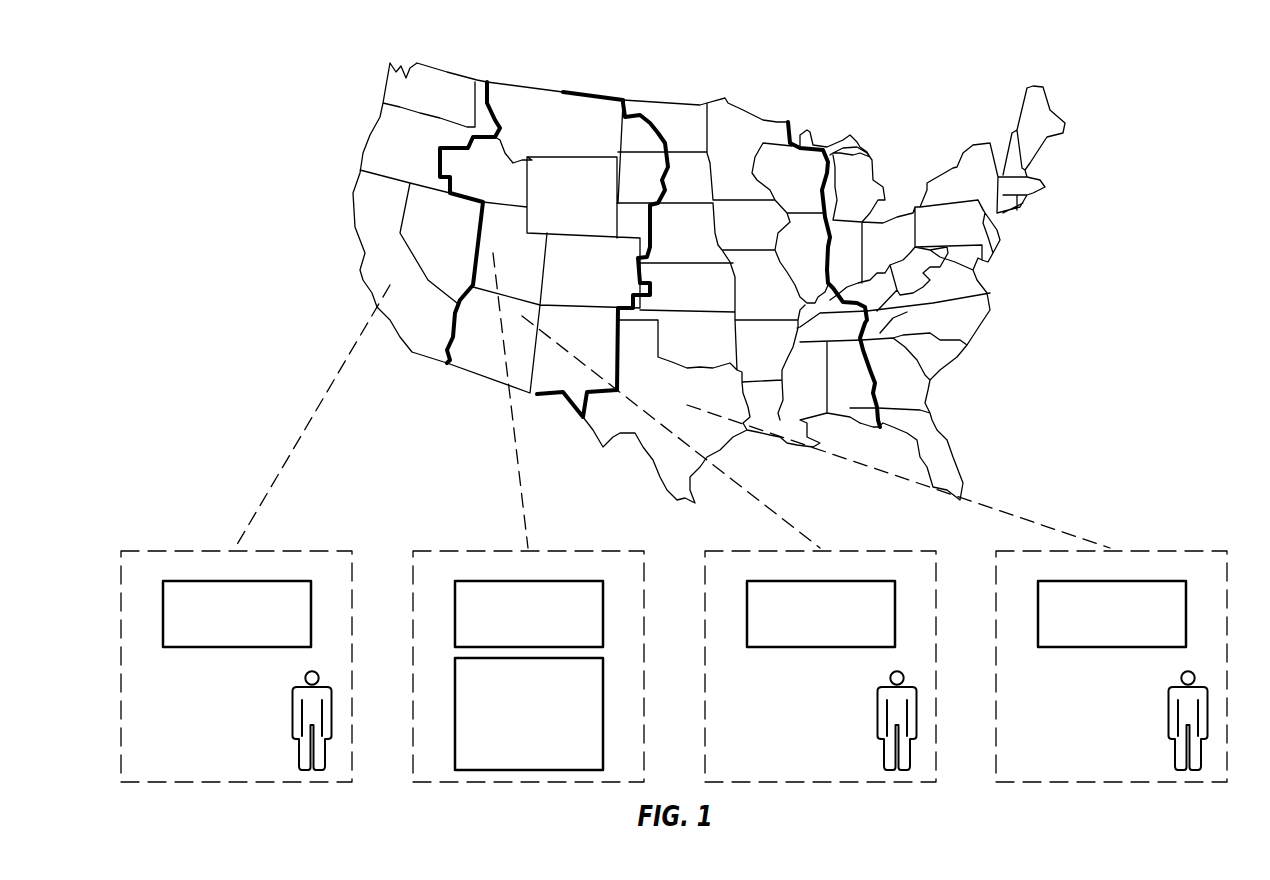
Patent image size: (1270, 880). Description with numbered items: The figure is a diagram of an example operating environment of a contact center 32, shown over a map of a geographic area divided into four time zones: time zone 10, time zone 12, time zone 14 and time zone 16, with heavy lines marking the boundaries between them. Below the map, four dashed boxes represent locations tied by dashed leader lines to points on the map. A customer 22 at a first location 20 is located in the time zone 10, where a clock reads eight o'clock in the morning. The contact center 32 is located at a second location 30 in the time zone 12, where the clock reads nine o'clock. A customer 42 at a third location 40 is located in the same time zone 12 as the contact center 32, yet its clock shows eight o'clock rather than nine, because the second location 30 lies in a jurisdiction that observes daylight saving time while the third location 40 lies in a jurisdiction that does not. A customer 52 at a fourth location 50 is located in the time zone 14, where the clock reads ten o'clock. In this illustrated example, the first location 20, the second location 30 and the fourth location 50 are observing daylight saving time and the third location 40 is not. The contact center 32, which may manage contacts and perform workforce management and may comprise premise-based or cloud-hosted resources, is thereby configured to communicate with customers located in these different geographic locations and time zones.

The time zone 10 is at (458, 60).
The time zone 12 is at (553, 78).
The time zone 14 is at (708, 76).
The time zone 16 is at (926, 77).
The first location 20 is at (310, 551).
The customer 22 is at (294, 697).
The second location 30 is at (602, 551).
The contact center 32 is at (517, 756).
The third location 40 is at (895, 551).
The customer 42 is at (879, 697).
The fourth location 50 is at (1186, 551).
The customer 52 is at (1170, 697).